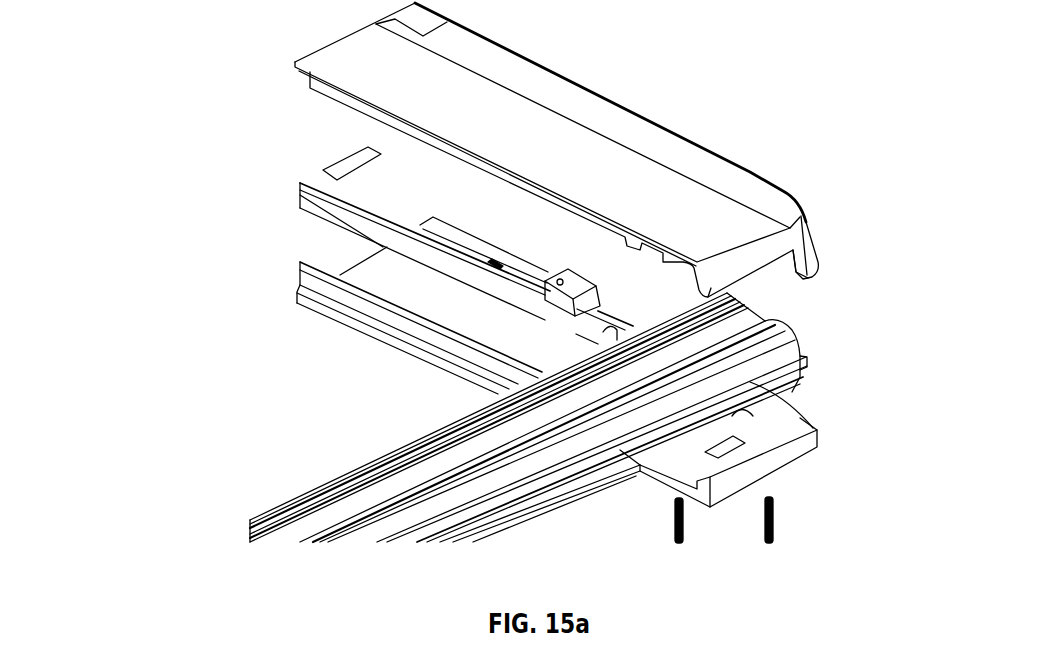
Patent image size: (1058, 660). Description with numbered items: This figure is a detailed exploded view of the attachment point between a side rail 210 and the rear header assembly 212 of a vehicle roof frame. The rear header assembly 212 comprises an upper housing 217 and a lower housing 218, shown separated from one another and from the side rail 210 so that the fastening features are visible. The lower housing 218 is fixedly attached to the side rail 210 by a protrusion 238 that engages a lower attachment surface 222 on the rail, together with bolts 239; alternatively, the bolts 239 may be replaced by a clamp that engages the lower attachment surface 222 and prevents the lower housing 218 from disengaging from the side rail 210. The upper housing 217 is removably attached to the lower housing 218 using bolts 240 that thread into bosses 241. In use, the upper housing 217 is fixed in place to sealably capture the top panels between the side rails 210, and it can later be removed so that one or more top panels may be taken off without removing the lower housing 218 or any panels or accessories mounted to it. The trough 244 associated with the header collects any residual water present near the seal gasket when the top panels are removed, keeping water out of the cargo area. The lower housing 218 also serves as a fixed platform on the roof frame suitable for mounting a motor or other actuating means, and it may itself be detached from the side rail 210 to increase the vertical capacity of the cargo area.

The side rail 210 is at (517, 420).
The rear header assembly 212 is at (196, 190).
The upper housing 217 is at (558, 77).
The lower housing 218 is at (778, 392).
The lower attachment surface 222 is at (511, 511).
The protrusion 238 is at (726, 452).
The bolt 239 is at (797, 527).
The bolt 240 is at (694, 523).
The boss 241 is at (640, 276).
The trough 244 is at (323, 175).